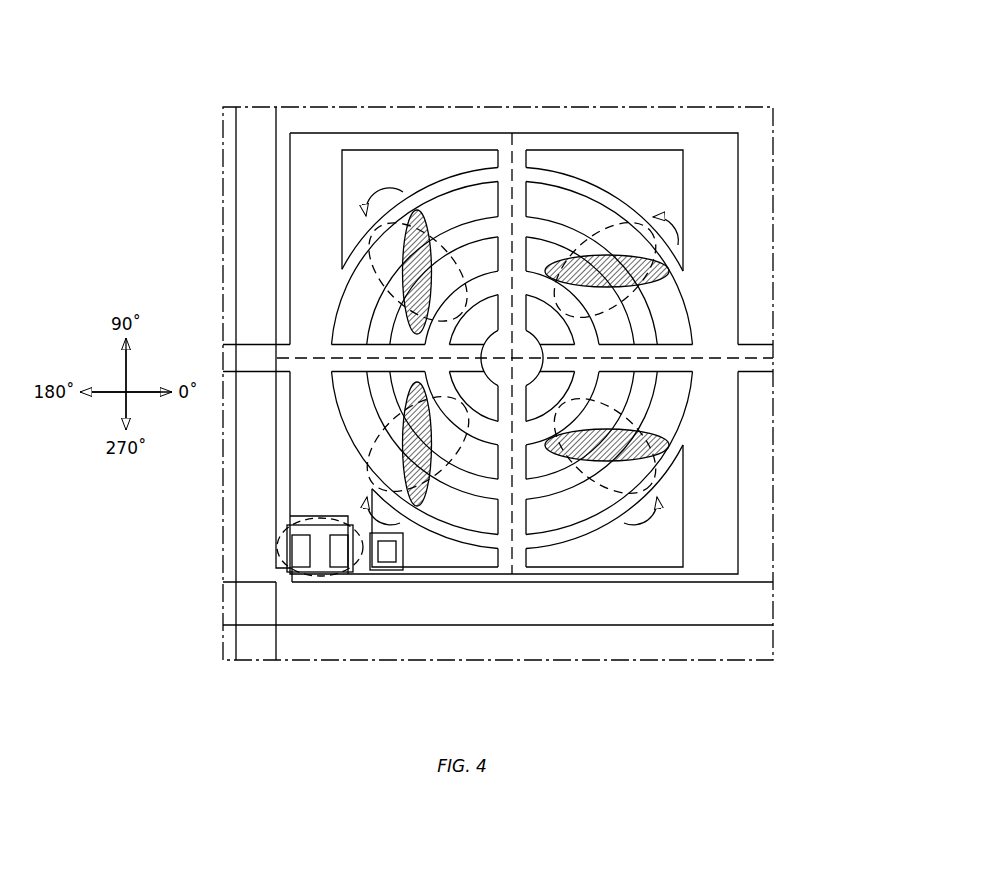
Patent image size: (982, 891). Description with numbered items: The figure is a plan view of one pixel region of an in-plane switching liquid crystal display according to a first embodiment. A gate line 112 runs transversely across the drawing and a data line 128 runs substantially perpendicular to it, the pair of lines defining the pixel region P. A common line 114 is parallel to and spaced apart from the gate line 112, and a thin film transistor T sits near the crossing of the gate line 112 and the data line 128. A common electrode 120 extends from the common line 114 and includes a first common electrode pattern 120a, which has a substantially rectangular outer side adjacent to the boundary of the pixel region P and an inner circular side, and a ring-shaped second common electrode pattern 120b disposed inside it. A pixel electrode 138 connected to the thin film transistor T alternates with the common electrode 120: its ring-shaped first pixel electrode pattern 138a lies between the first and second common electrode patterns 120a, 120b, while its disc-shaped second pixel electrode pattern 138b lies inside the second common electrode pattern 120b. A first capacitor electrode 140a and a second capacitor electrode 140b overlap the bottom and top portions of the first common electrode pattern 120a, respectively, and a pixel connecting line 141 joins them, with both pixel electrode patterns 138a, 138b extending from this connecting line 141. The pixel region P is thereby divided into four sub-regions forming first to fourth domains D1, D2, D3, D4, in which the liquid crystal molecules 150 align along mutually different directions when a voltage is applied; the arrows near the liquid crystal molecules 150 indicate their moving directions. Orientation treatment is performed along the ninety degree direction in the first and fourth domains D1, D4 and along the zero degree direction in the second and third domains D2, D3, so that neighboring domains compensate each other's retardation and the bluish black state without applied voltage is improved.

The gate line 112 is at (773, 582).
The common line 114 is at (773, 344).
The common electrode 120 is at (688, 58).
The first common electrode pattern 120a is at (594, 143).
The second common electrode pattern 120b is at (520, 396).
The data line 128 is at (276, 660).
The pixel electrode 138 is at (858, 250).
The first pixel electrode pattern 138a is at (637, 303).
The second pixel electrode pattern 138b is at (525, 340).
The first capacitor electrode 140a is at (580, 553).
The second capacitor electrode 140b is at (428, 167).
The pixel connecting line 141 is at (505, 258).
The liquid crystal molecules 150 is at (425, 213).
The thin film transistor T is at (318, 574).
The pixel region P is at (288, 183).
The first domain D1 is at (323, 258).
The second domain D2 is at (700, 192).
The third domain D3 is at (700, 483).
The fourth domain D4 is at (323, 483).